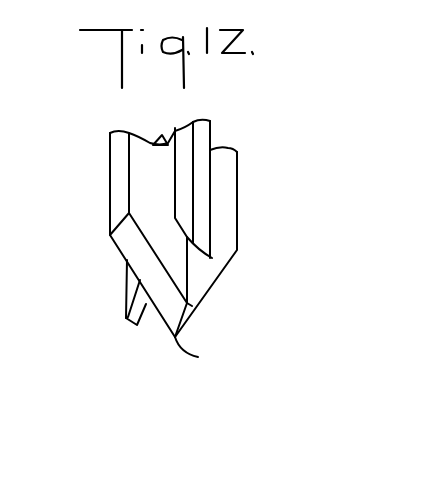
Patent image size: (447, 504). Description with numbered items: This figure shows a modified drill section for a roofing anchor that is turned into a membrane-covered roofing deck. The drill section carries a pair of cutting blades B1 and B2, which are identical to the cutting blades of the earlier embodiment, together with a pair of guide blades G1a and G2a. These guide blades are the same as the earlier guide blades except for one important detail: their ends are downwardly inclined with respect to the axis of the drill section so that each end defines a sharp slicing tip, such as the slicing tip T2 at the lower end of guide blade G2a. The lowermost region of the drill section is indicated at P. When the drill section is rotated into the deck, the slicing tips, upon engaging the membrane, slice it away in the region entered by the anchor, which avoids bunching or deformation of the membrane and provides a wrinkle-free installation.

The guide blade G1a is at (217, 225).
The guide blade G2a is at (126, 302).
The cutting blade B1 is at (170, 275).
The cutting blade B2 is at (192, 306).
The slicing tip T2 is at (133, 323).
The point P is at (199, 354).